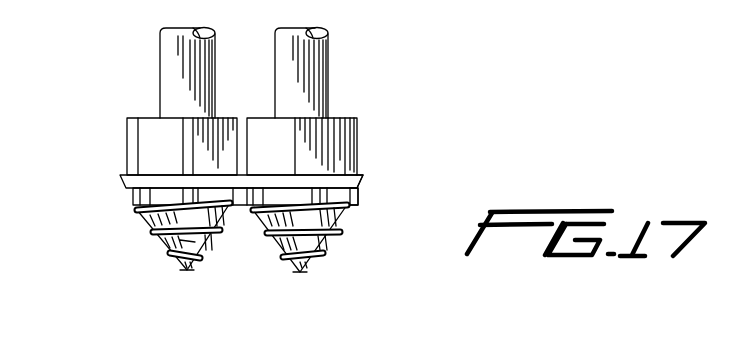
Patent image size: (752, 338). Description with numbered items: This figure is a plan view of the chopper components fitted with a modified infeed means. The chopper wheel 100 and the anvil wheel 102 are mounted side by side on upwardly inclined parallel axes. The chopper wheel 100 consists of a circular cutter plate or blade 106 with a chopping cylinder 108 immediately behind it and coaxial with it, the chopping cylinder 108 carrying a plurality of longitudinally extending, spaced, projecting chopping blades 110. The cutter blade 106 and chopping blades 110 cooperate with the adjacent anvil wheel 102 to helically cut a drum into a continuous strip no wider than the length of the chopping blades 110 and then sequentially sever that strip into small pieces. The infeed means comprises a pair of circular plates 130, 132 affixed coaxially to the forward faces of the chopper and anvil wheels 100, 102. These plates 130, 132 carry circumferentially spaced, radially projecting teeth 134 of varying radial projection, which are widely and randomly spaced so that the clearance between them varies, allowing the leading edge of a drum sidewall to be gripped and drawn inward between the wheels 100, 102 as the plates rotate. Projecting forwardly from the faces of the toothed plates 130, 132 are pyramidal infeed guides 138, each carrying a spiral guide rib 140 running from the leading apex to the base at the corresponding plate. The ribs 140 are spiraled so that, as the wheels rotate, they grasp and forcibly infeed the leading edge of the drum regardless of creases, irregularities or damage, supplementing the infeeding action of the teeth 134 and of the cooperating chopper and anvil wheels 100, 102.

The chopper wheel 100 is at (118, 122).
The anvil wheel 102 is at (338, 103).
The circular cutter plate or blade 106 is at (122, 179).
The chopping cylinder 108 is at (150, 123).
The chopping blades 110 is at (126, 156).
The circular plate 130 is at (130, 197).
The circular plate 132 is at (352, 185).
The teeth 134 is at (362, 196).
The pyramidal infeed guides 138 is at (297, 273).
The spiral guide rib 140 is at (152, 241).